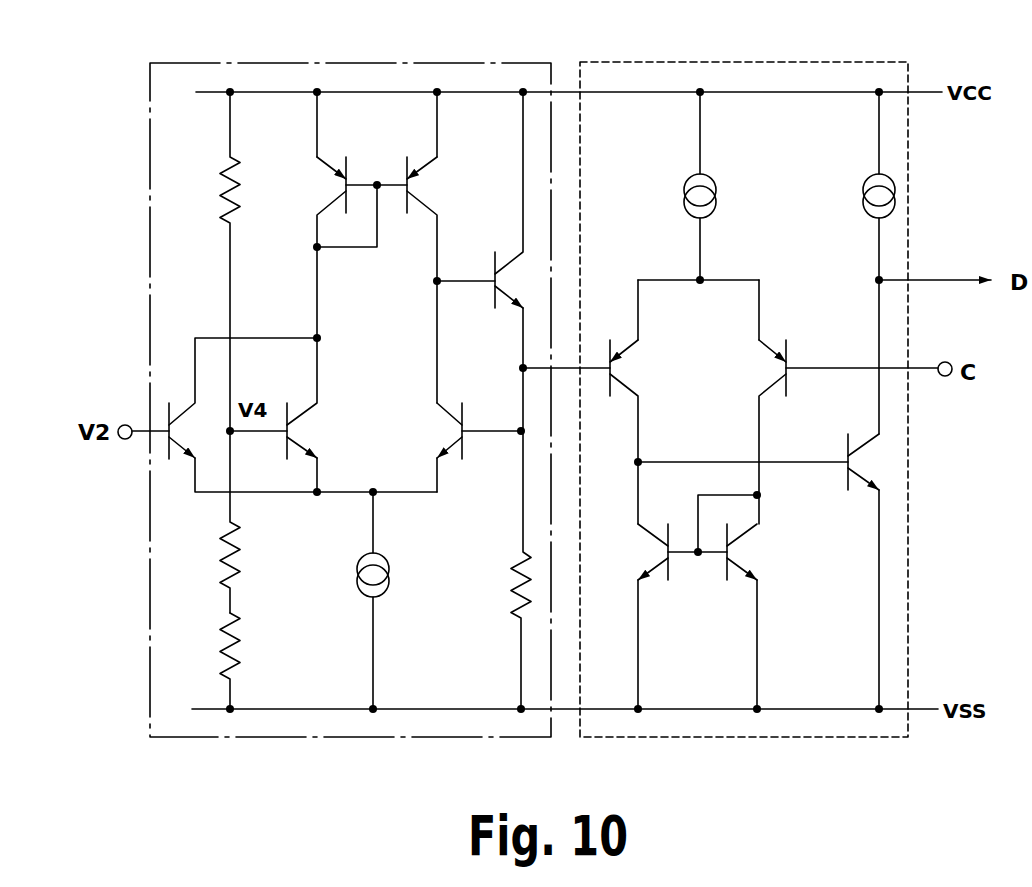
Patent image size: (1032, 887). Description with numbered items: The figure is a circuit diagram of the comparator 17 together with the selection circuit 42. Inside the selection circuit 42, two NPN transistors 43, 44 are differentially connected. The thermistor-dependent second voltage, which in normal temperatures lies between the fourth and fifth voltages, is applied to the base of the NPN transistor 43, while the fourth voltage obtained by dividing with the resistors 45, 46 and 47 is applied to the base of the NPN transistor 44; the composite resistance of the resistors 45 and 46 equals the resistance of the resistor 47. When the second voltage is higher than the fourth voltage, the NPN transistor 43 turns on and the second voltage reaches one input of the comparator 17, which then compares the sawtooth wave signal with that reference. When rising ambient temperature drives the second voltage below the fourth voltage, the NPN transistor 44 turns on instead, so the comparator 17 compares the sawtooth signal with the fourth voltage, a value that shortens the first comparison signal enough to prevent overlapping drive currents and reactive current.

The selection circuit 42 is at (360, 63).
The comparator 17 is at (697, 62).
The NPN transistor 43 is at (190, 402).
The NPN transistor 44 is at (304, 434).
The resistor 45 is at (222, 190).
The resistor 46 is at (222, 556).
The resistor 47 is at (222, 648).